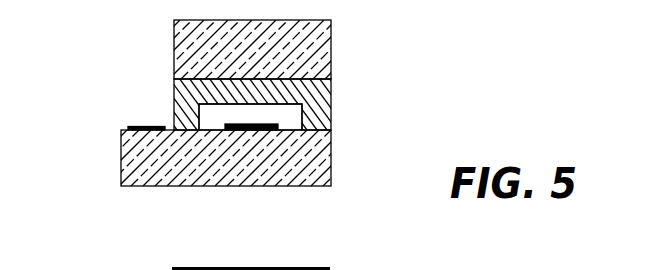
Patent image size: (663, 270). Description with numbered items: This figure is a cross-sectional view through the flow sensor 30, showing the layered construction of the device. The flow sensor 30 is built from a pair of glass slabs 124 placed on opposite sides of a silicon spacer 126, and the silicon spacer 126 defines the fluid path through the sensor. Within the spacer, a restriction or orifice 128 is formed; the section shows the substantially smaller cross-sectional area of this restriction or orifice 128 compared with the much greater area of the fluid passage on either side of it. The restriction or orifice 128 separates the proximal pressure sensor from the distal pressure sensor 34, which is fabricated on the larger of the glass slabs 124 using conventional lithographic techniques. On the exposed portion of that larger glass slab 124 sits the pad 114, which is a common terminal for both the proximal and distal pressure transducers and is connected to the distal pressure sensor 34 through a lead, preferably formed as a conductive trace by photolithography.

The flow sensor 30 is at (225, 145).
The distal pressure sensor 34 is at (225, 125).
The pad 114 is at (126, 127).
The glass slabs 124 is at (332, 44).
The silicon spacer 126 is at (178, 90).
The restriction or orifice 128 is at (291, 114).